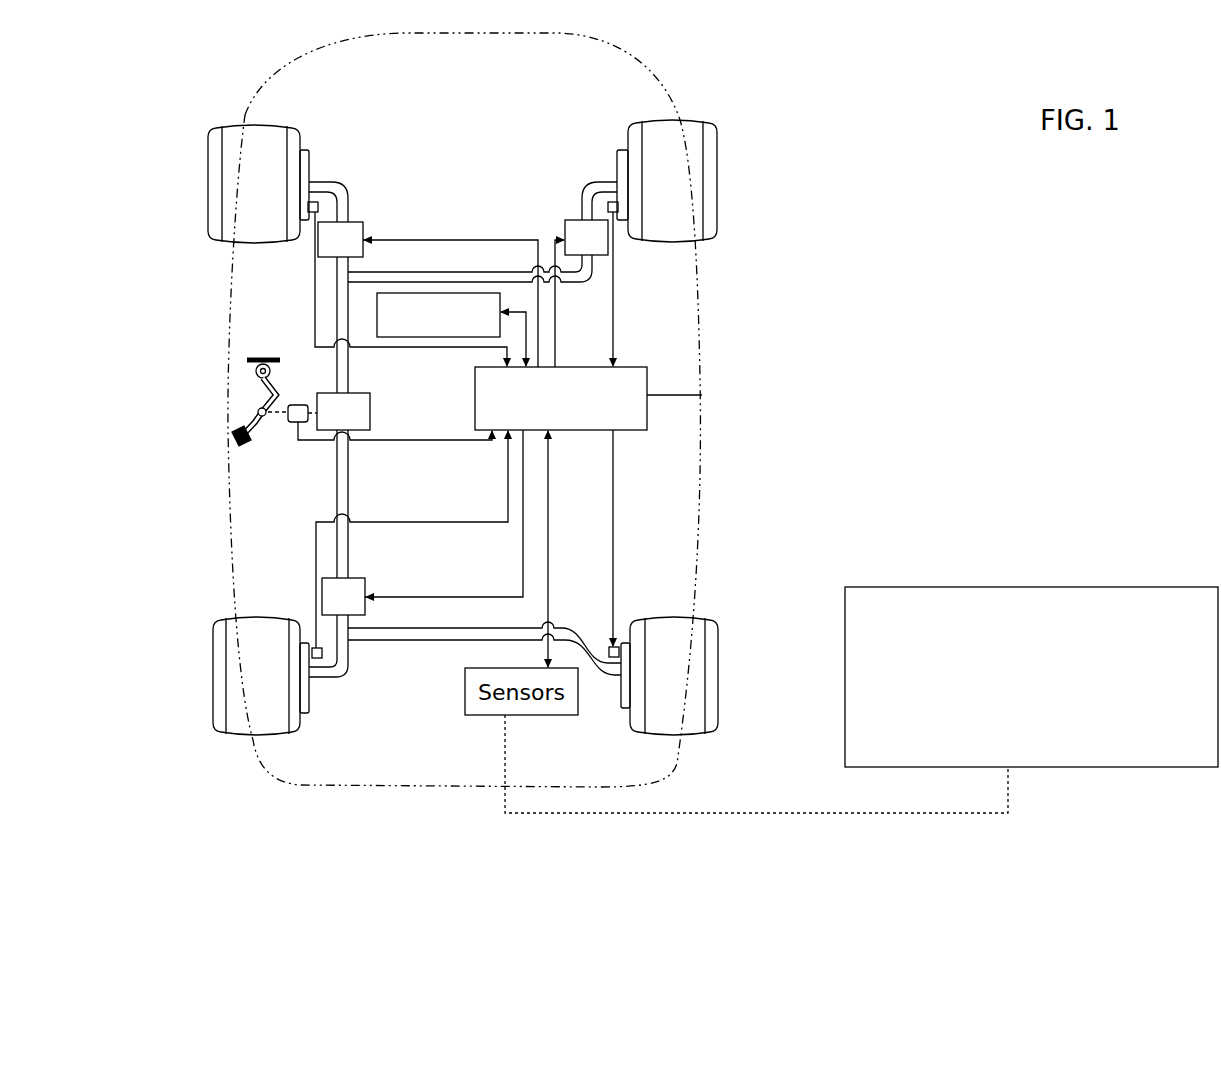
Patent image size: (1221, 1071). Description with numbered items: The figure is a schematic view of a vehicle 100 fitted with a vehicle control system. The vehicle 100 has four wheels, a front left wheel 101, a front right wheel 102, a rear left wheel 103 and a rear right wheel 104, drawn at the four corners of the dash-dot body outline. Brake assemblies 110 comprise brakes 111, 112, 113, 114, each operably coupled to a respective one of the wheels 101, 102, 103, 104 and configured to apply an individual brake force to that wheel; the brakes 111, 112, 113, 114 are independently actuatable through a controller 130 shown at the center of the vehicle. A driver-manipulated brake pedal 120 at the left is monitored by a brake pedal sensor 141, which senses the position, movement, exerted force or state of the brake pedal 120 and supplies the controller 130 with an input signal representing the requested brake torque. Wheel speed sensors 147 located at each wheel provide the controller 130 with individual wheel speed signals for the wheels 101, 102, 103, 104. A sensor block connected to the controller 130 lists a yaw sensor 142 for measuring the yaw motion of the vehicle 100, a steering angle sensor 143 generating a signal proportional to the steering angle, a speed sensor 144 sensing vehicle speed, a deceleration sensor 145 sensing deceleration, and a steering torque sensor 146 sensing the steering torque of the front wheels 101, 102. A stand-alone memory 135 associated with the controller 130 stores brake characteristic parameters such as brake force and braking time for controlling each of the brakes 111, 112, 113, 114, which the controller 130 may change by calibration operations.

The vehicle 100 is at (668, 79).
The front left wheel 101 is at (208, 178).
The front right wheel 102 is at (718, 172).
The rear left wheel 103 is at (213, 678).
The rear right wheel 104 is at (720, 670).
The brake assemblies 110 is at (466, 441).
The brake 111 is at (304, 150).
The brake 112 is at (619, 150).
The brake 113 is at (312, 714).
The brake 114 is at (624, 710).
The brake pedal 120 is at (258, 426).
The controller 130 is at (648, 368).
The memory 135 is at (437, 338).
The brake pedal sensor 141 is at (299, 404).
The yaw sensor 142 is at (953, 611).
The steering angle sensor 143 is at (1013, 644).
The speed sensor 144 is at (966, 677).
The deceleration sensor 145 is at (1003, 710).
The steering torque sensor 146 is at (1020, 743).
The wheel speed sensors 147 is at (310, 215).